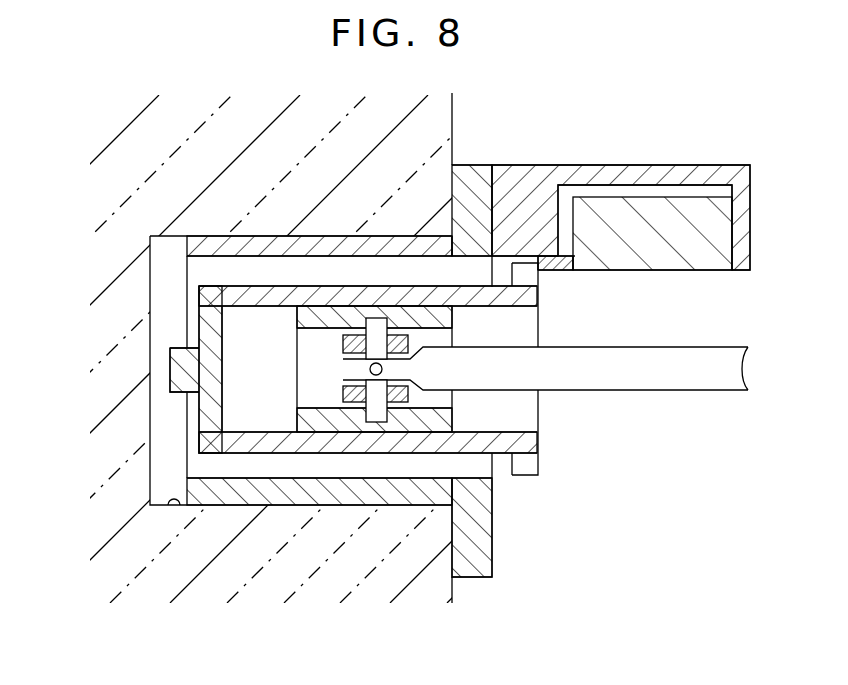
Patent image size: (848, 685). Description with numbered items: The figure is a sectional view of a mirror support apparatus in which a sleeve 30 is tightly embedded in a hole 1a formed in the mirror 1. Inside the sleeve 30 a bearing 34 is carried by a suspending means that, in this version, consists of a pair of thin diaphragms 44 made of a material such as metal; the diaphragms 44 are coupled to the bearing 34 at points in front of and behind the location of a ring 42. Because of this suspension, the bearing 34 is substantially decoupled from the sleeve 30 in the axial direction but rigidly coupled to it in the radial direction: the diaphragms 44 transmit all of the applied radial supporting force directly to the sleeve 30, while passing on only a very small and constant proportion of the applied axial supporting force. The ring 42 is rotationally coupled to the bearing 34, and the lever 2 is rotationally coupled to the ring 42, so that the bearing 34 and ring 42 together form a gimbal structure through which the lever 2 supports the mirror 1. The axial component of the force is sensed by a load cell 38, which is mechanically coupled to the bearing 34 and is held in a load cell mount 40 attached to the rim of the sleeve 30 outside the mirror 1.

The mirror 1 is at (453, 119).
The hole 1a is at (178, 507).
The lever 2 is at (630, 382).
The sleeve 30 is at (310, 237).
The bearing 34 is at (438, 424).
The load cell 38 is at (688, 260).
The load cell mount 40 is at (621, 166).
The ring 42 is at (345, 403).
The thin diaphragms 44 is at (187, 449).